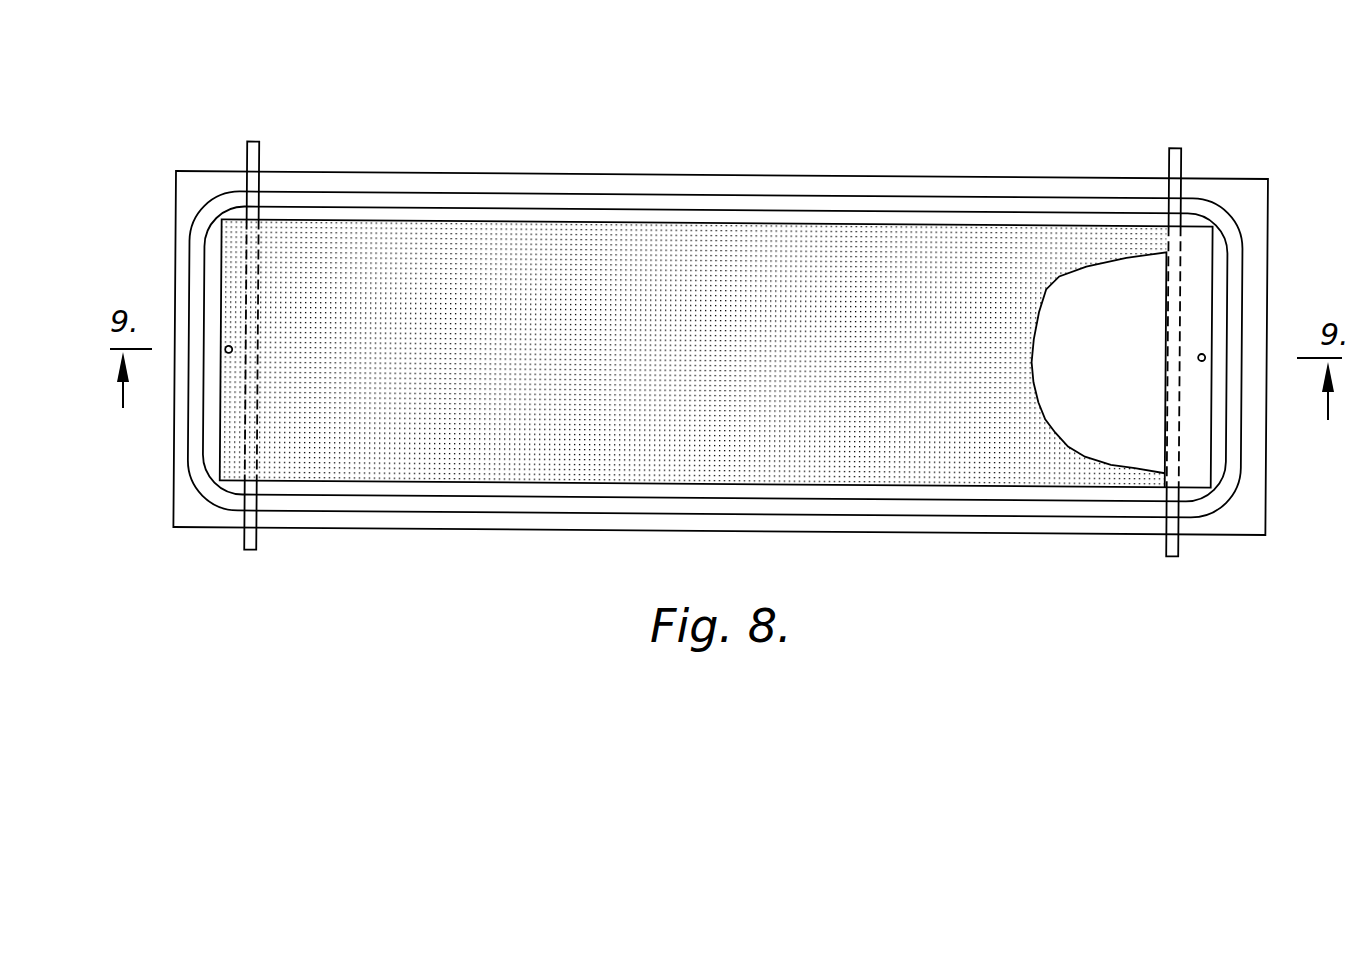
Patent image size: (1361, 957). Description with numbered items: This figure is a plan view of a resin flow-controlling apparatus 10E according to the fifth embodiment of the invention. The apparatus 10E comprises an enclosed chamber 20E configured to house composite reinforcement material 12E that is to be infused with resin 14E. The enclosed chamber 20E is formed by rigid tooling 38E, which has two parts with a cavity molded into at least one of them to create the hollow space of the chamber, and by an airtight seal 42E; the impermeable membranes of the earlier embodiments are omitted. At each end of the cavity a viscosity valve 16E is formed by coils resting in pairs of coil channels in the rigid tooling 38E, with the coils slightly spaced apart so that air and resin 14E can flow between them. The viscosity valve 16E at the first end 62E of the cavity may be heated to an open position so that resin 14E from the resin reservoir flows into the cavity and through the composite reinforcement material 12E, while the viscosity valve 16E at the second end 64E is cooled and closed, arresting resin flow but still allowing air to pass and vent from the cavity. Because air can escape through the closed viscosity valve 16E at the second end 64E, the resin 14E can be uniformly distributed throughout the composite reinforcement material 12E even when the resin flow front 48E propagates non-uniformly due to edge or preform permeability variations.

The resin flow-controlling apparatus 10E is at (566, 86).
The composite reinforcement material 12E is at (1132, 275).
The resin 14E is at (835, 247).
The viscosity valve 16E is at (259, 155).
The enclosed chamber 20E is at (773, 218).
The rigid tooling 38E is at (897, 533).
The airtight seal 42E is at (555, 500).
The resin flow front 48E is at (1035, 382).
The first end 62E is at (238, 420).
The second end 64E is at (1187, 426).